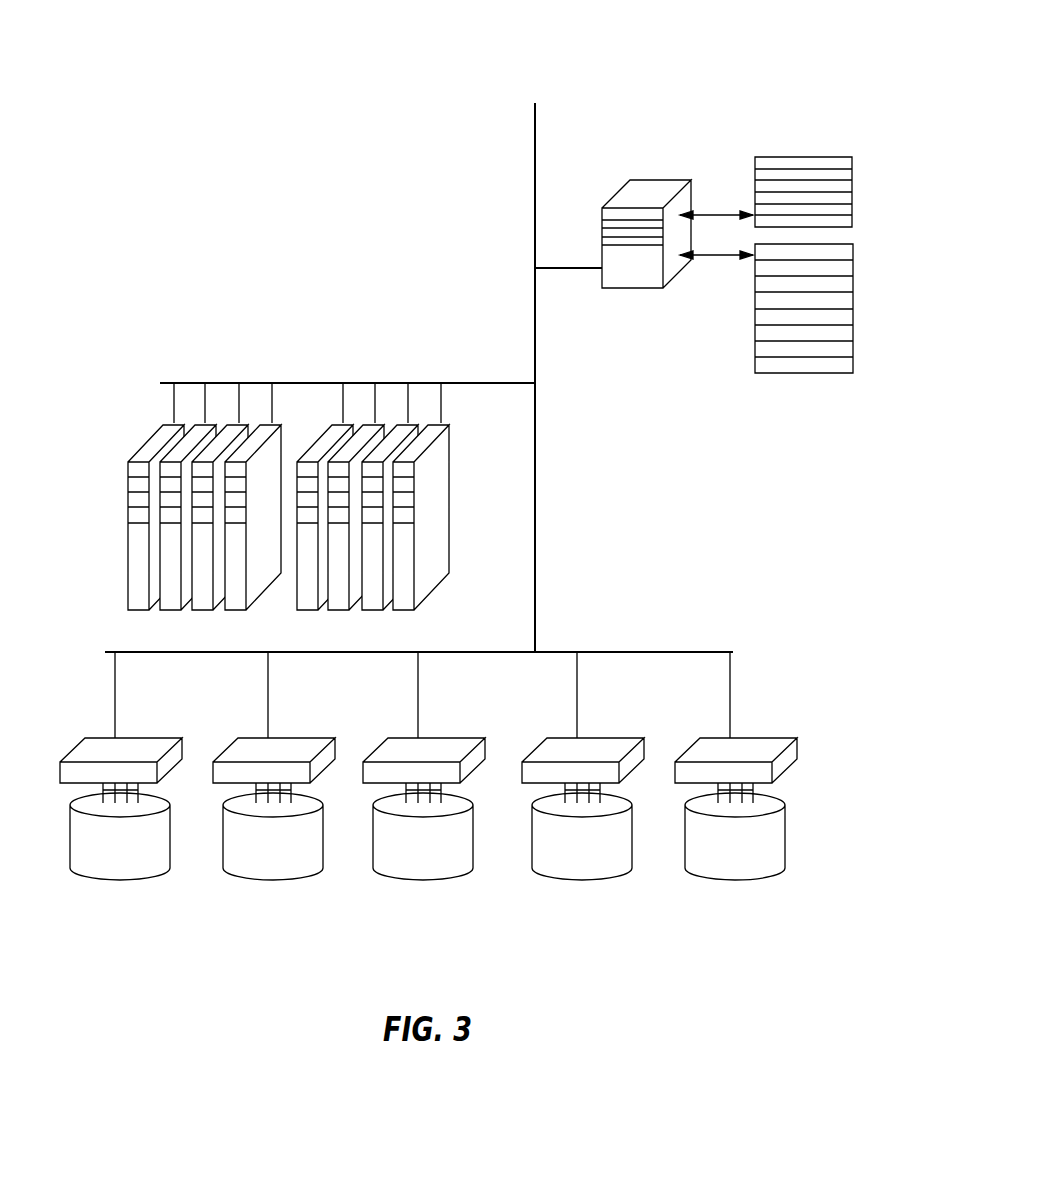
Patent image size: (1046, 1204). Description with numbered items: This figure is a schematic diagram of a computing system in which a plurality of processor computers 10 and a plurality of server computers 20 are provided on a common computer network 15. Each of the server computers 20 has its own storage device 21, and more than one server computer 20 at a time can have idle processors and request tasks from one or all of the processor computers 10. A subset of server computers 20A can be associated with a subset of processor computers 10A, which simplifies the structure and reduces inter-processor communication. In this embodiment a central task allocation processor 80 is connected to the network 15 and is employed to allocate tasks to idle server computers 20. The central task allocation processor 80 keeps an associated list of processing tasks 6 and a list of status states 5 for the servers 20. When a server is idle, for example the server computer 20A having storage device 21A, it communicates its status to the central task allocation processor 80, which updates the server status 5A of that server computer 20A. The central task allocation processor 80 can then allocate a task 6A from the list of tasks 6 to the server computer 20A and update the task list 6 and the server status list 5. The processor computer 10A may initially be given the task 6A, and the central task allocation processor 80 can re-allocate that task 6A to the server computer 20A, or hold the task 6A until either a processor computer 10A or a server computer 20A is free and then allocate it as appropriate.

The list of status states 5 is at (729, 349).
The server status 5A is at (822, 363).
The list of processing tasks 6 is at (712, 103).
The task 6A is at (793, 187).
The central task allocation processor 80 is at (652, 190).
The processor computers 10 is at (150, 438).
The processor computer 10A is at (450, 525).
The computer network 15 is at (694, 650).
The server computers 20 is at (100, 747).
The server computer 20A is at (412, 738).
The storage device 21 is at (127, 850).
The storage device 21A is at (420, 880).